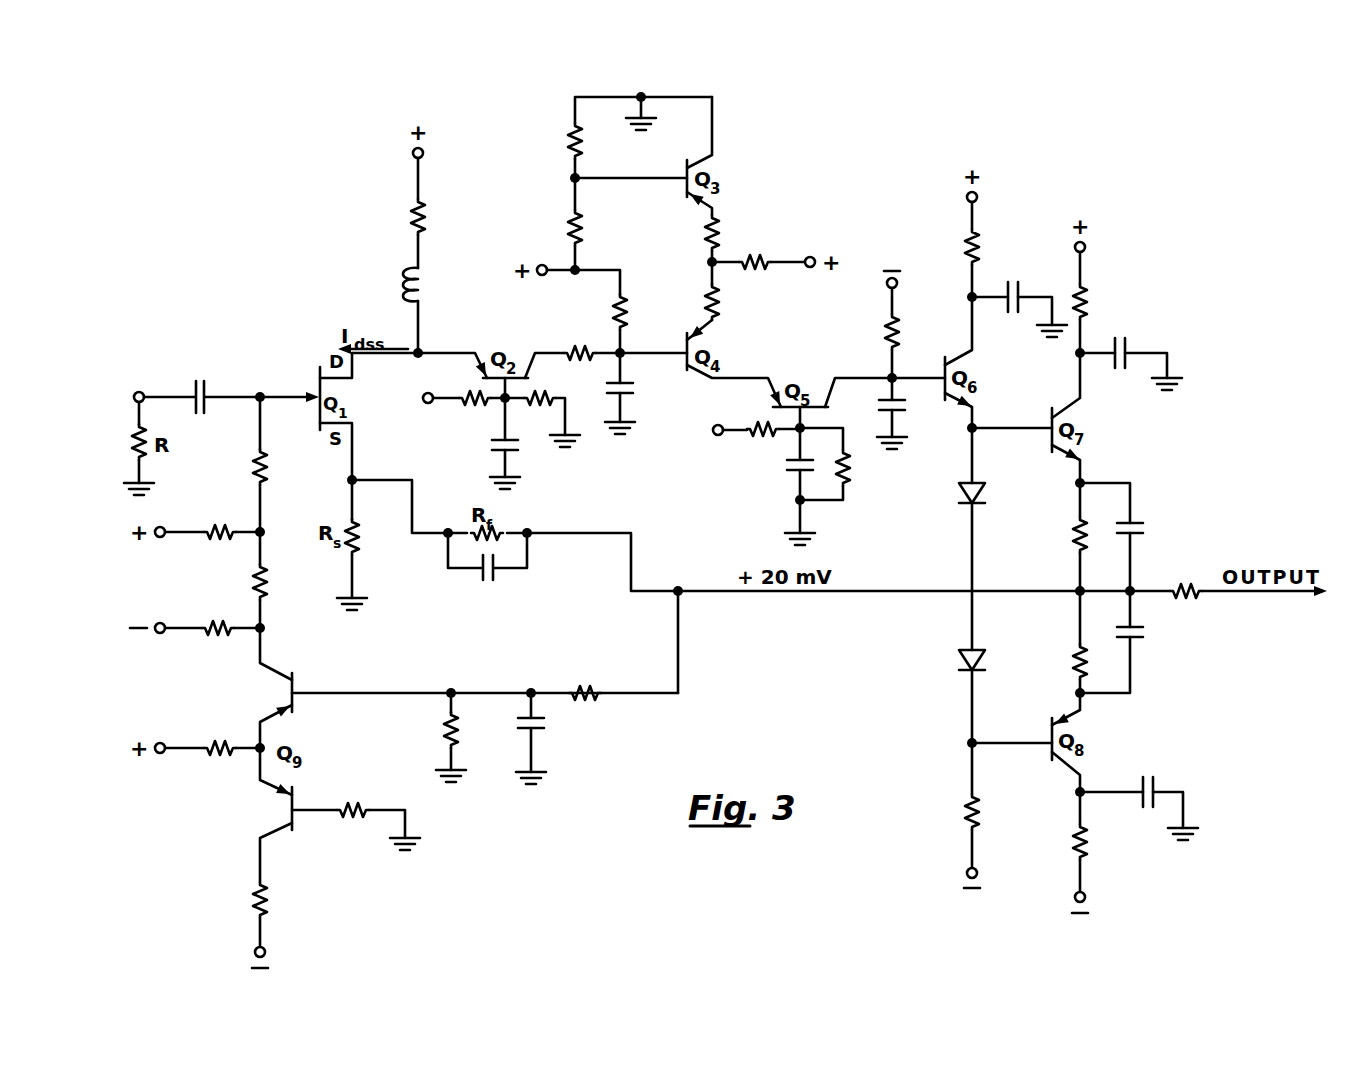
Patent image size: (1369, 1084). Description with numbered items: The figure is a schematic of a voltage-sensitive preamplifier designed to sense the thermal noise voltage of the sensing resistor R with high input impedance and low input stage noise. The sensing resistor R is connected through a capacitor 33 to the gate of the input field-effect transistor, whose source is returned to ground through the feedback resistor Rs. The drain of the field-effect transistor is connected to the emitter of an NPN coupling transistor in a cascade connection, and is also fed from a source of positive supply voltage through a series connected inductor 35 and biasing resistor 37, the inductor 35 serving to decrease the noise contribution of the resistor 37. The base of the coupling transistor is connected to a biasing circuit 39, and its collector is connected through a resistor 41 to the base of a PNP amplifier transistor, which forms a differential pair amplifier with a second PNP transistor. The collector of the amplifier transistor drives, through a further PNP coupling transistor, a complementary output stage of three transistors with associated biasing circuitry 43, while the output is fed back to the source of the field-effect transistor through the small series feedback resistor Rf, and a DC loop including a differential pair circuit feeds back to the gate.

The capacitor 33 is at (206, 390).
The inductor 35 is at (424, 296).
The biasing resistor 37 is at (424, 224).
The biasing circuit 39 is at (474, 453).
The resistor 41 is at (577, 350).
The bias network for transistor Q5 43 is at (771, 470).